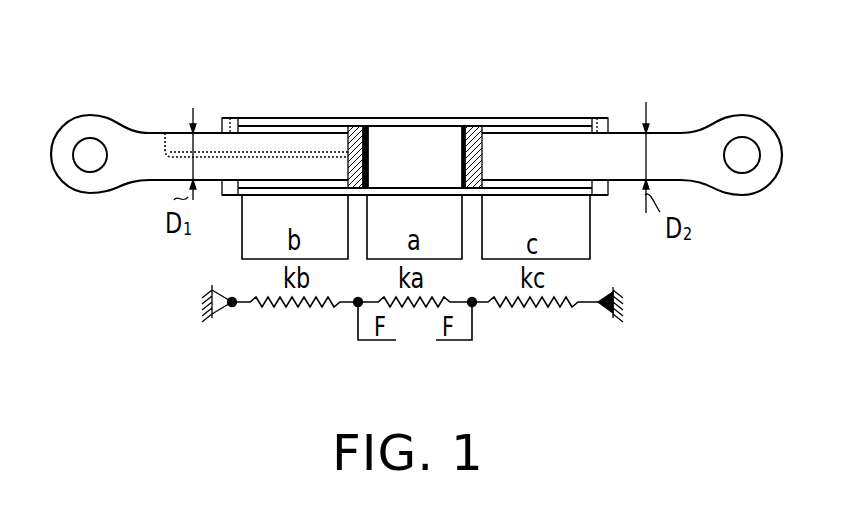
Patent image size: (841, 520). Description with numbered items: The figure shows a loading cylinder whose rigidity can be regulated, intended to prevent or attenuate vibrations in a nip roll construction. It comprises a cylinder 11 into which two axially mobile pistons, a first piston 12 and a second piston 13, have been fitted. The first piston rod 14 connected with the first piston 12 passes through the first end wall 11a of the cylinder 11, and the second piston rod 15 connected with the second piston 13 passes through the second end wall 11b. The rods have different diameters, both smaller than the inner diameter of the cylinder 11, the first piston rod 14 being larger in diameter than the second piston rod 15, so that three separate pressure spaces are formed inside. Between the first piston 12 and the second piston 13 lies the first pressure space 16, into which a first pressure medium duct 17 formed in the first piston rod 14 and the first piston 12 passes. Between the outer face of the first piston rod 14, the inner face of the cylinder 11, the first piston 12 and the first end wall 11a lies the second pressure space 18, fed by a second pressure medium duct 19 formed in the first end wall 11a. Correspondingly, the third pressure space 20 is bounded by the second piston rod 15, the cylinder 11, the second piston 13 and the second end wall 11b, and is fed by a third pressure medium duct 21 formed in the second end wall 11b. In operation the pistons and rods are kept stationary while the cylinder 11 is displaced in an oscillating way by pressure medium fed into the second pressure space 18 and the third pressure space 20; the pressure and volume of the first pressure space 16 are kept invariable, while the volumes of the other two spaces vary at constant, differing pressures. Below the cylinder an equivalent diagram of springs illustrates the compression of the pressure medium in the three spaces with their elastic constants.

The cylinder 11 is at (312, 118).
The first end wall 11a is at (223, 190).
The second end wall 11b is at (608, 190).
The first piston 12 is at (358, 125).
The second piston 13 is at (470, 126).
The first piston rod 14 is at (113, 132).
The second piston rod 15 is at (678, 143).
The first pressure space 16 is at (425, 143).
The first pressure medium duct 17 is at (167, 126).
The second pressure space 18 is at (290, 181).
The second pressure medium duct 19 is at (232, 112).
The third pressure space 20 is at (537, 181).
The third pressure medium duct 21 is at (597, 112).